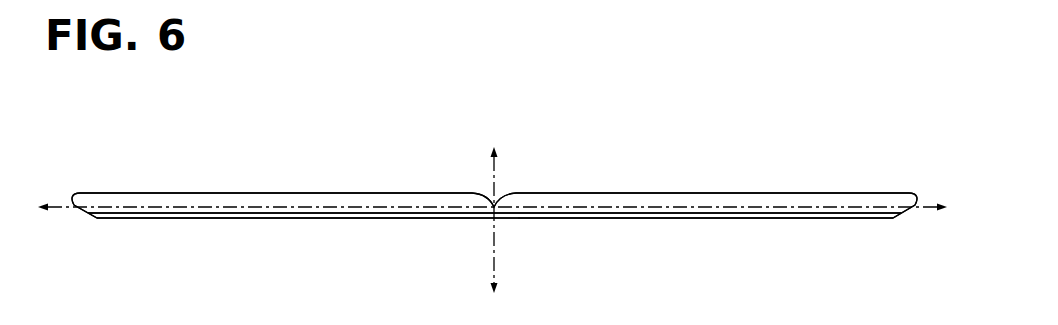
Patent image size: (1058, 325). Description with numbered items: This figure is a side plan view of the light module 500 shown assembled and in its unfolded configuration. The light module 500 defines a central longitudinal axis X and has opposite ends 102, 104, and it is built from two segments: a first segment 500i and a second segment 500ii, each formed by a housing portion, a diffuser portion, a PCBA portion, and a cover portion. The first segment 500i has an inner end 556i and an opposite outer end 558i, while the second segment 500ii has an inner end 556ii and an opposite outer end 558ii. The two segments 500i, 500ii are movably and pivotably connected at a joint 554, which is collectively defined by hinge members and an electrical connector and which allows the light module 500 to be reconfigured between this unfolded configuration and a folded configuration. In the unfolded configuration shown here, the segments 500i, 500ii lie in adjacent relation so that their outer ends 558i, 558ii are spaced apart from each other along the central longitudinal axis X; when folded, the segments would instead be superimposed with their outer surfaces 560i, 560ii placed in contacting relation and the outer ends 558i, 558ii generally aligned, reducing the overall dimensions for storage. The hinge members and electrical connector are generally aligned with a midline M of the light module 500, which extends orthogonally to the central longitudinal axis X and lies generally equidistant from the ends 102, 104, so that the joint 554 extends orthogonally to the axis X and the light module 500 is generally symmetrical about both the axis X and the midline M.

The light module 500 is at (616, 120).
The first segment 500i is at (280, 176).
The second segment 500ii is at (706, 174).
The end 102 is at (68, 182).
The end 104 is at (915, 181).
The joint 554 is at (505, 180).
The inner end 556i is at (481, 227).
The inner end 556ii is at (508, 227).
The outer end 558i is at (98, 224).
The outer end 558ii is at (888, 227).
The outer surface 560i is at (388, 193).
The outer surface 560ii is at (600, 193).
The central longitudinal axis X is at (65, 210).
The midline M is at (498, 268).